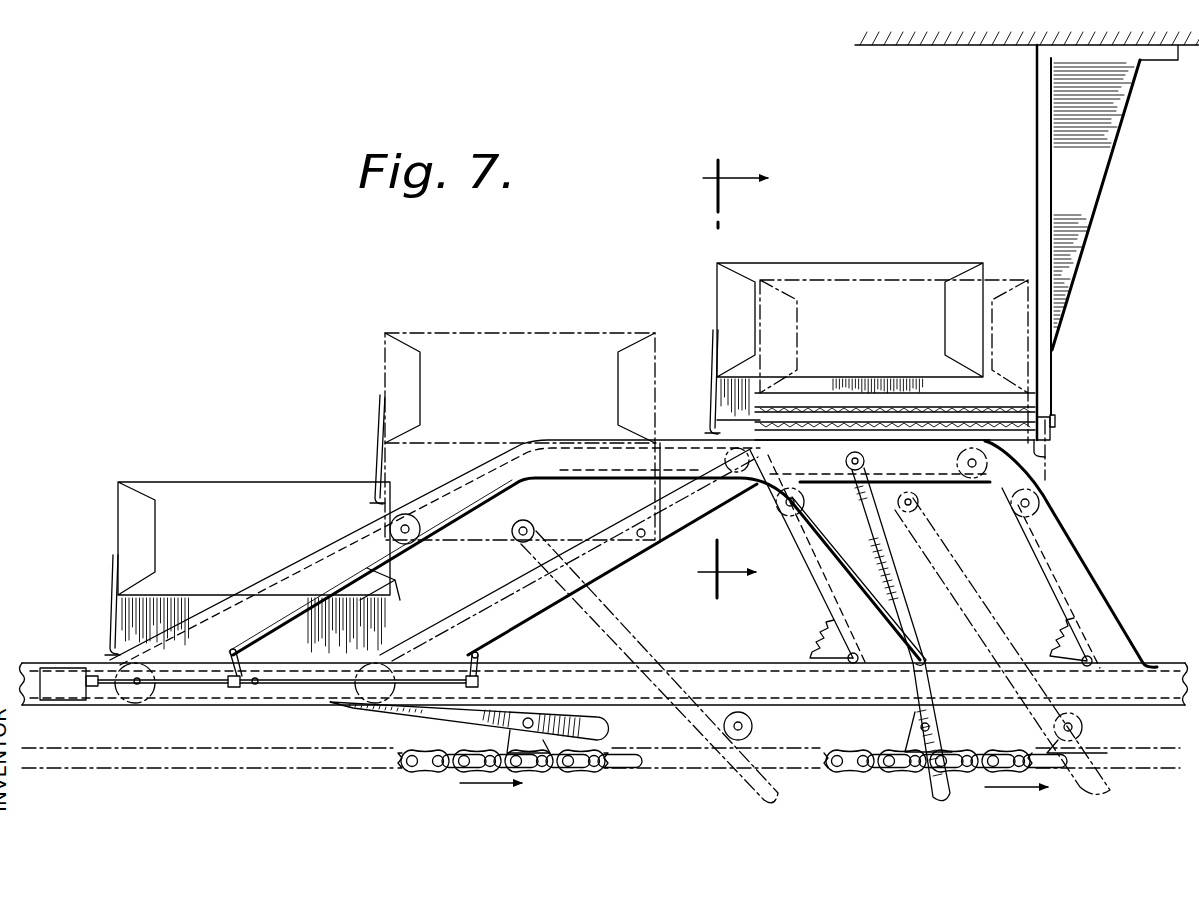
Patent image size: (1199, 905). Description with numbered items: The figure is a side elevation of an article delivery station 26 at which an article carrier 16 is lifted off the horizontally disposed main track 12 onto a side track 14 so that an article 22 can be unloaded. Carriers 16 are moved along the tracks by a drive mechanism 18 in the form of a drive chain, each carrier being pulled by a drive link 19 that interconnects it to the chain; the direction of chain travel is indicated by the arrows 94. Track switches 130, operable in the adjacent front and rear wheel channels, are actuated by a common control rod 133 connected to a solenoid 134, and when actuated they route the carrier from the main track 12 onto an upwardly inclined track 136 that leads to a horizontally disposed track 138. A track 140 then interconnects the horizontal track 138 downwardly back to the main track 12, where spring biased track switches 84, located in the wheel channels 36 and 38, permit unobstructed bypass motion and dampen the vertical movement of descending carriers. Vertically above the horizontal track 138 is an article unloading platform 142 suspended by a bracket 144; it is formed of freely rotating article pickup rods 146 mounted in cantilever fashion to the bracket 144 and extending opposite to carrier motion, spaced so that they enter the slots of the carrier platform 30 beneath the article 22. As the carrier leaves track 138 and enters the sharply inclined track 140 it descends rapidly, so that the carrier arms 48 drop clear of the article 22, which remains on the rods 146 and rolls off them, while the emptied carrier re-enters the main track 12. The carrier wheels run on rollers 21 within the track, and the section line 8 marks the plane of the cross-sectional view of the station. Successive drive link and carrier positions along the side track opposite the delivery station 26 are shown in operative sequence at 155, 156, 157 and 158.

The section line 8- 8 is at (749, 379).
The main track 12 is at (60, 663).
The side track 14 is at (550, 551).
The article carrier 16 is at (108, 635).
The drive mechanism 18 is at (322, 762).
The drive link 19 is at (628, 612).
The rollers 21 is at (925, 727).
The article 22 is at (172, 480).
The article delivery station 26 is at (676, 322).
The article carrier platform 30 is at (844, 380).
The channel 36 is at (563, 598).
The channel 38 is at (408, 546).
The carrier arm 48 is at (112, 570).
The track switch 84 is at (802, 650).
The direction of chain travel 94 is at (462, 784).
The track switch 130 is at (247, 651).
The control rod 133 is at (226, 690).
The solenoid 134 is at (70, 688).
The upwardly inclined track 136 is at (322, 556).
The horizontally disposed track 138 is at (672, 432).
The track 140 is at (1092, 554).
The article unloading platform 142 is at (1045, 457).
The bracket 144 is at (1045, 385).
The article pickup rod 146 is at (882, 393).
The drive link and carrier position 155 is at (612, 810).
The drive link and carrier position 156 is at (792, 817).
The drive link and carrier position 157 is at (975, 833).
The drive link and carrier position 158 is at (1152, 827).